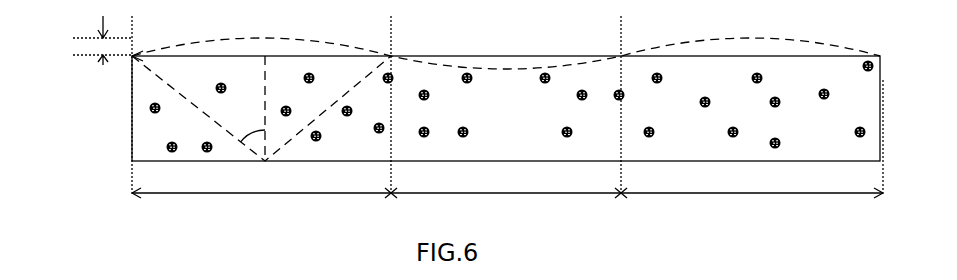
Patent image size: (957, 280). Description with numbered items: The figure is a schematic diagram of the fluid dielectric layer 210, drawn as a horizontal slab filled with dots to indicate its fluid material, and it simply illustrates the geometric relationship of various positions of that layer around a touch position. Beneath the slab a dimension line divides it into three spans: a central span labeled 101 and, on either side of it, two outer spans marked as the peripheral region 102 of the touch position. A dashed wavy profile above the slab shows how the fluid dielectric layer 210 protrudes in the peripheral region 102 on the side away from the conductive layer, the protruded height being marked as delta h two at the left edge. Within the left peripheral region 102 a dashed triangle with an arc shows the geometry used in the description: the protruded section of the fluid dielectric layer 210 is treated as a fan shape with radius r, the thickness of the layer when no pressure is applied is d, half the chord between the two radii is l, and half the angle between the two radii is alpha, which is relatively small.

The fluid dielectric layer 210 is at (149, 138).
The peripheral region 102 is at (507, 206).
The central region 101 is at (506, 208).